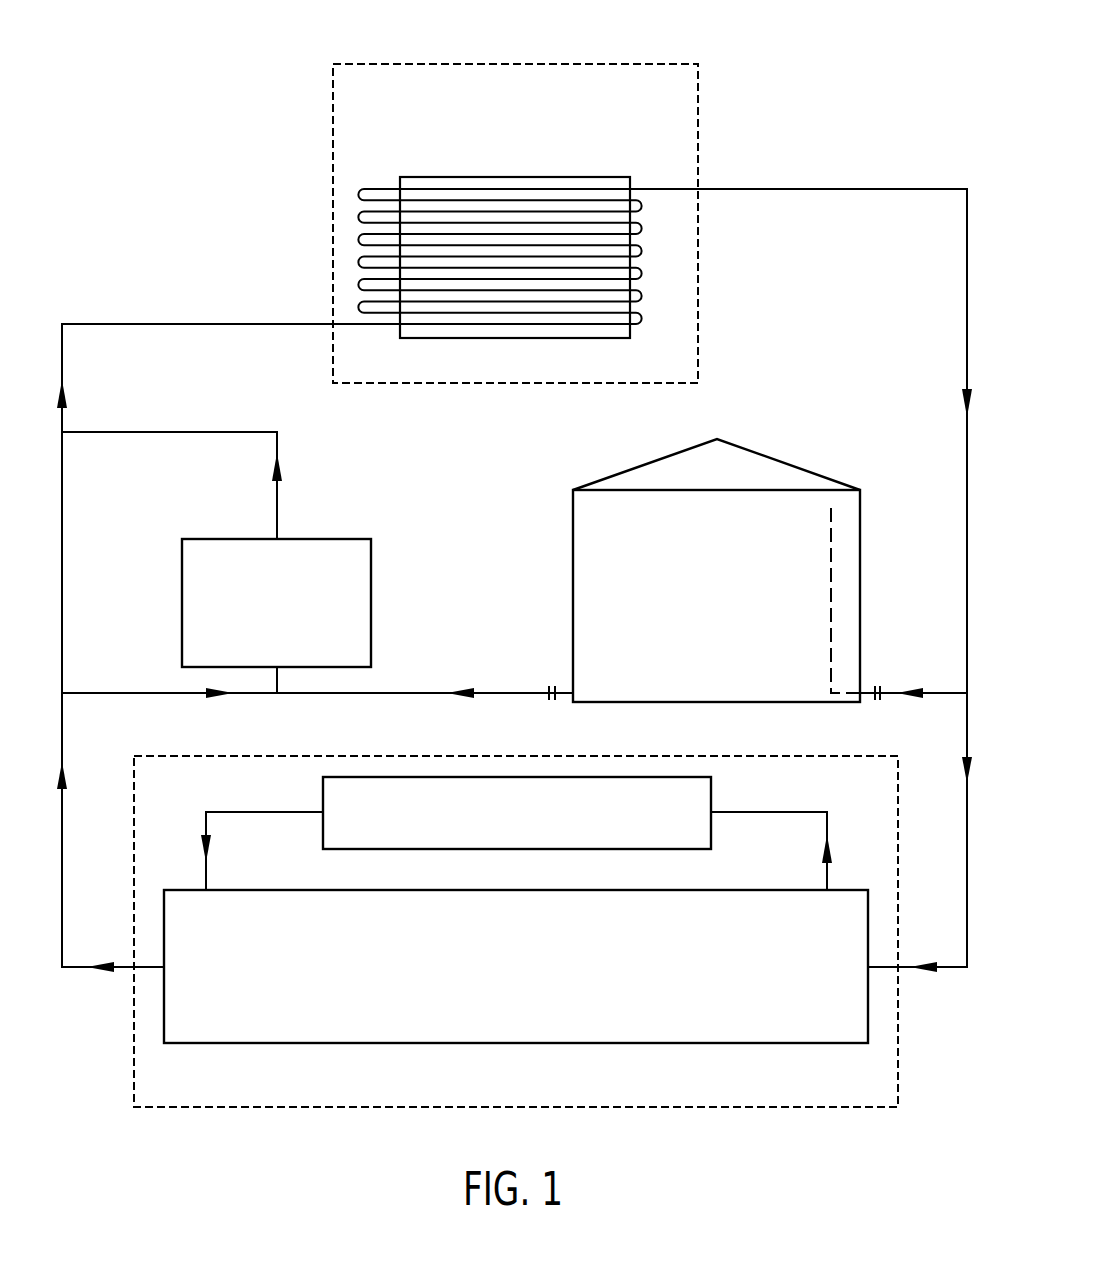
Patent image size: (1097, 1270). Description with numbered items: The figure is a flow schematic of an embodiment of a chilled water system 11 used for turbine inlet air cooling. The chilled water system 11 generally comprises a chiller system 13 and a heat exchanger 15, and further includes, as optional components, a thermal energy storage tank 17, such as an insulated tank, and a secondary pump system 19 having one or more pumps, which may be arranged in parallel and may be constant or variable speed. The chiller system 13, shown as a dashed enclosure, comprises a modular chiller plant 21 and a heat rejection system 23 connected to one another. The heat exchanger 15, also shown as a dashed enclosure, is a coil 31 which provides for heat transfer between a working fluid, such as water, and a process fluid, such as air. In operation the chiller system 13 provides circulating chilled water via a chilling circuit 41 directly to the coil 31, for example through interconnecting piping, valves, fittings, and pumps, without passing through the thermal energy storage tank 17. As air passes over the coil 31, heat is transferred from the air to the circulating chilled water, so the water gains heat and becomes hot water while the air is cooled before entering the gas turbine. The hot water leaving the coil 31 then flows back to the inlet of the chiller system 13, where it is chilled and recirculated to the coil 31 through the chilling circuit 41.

The chilled water system 11 is at (822, 76).
The chiller system 13 is at (898, 1068).
The heat exchanger 15 is at (517, 63).
The thermal energy storage tank 17 is at (860, 593).
The secondary pump system 19 is at (182, 603).
The modular chiller plant 21 is at (868, 933).
The heat rejection system 23 is at (711, 795).
The coil 31 is at (360, 193).
The chilling circuit 41 is at (63, 345).